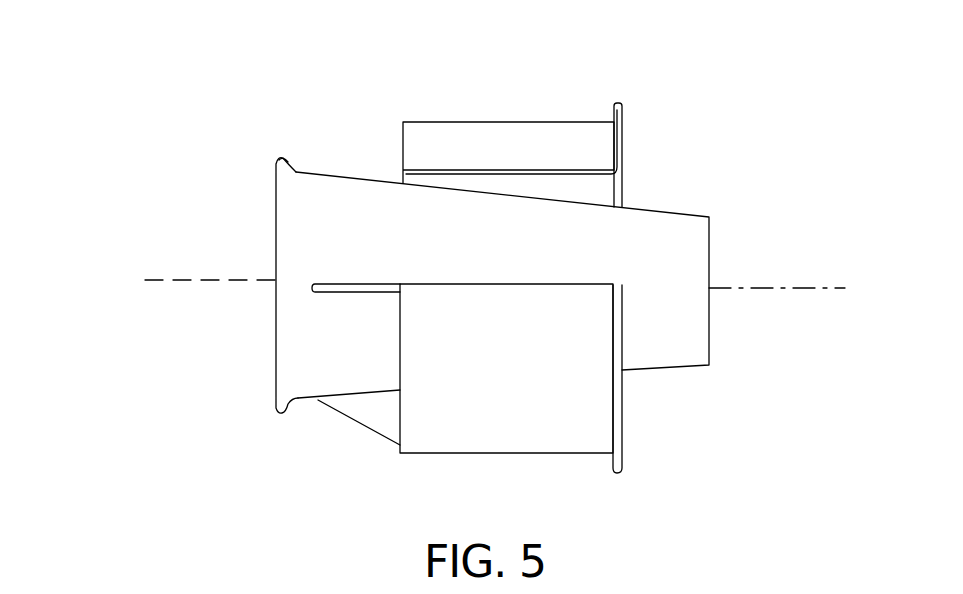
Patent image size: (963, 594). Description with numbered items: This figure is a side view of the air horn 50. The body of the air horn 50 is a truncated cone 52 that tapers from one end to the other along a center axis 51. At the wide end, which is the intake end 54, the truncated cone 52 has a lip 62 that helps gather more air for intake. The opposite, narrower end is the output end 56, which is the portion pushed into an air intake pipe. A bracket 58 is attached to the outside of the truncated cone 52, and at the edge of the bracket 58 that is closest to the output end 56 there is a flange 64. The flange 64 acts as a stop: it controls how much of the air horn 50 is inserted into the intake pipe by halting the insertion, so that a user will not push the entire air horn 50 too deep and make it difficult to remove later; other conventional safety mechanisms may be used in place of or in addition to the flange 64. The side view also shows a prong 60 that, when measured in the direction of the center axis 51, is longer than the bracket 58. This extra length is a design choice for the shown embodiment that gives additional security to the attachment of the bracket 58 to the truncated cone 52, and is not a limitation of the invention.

The air horn 50 is at (786, 129).
The center axis 51 is at (180, 278).
The truncated cone 52 is at (350, 205).
The intake end 54 is at (276, 257).
The output end 56 is at (712, 288).
The bracket 58 is at (465, 137).
The prong 60 is at (340, 293).
The lip 62 is at (279, 159).
The flange 64 is at (620, 103).